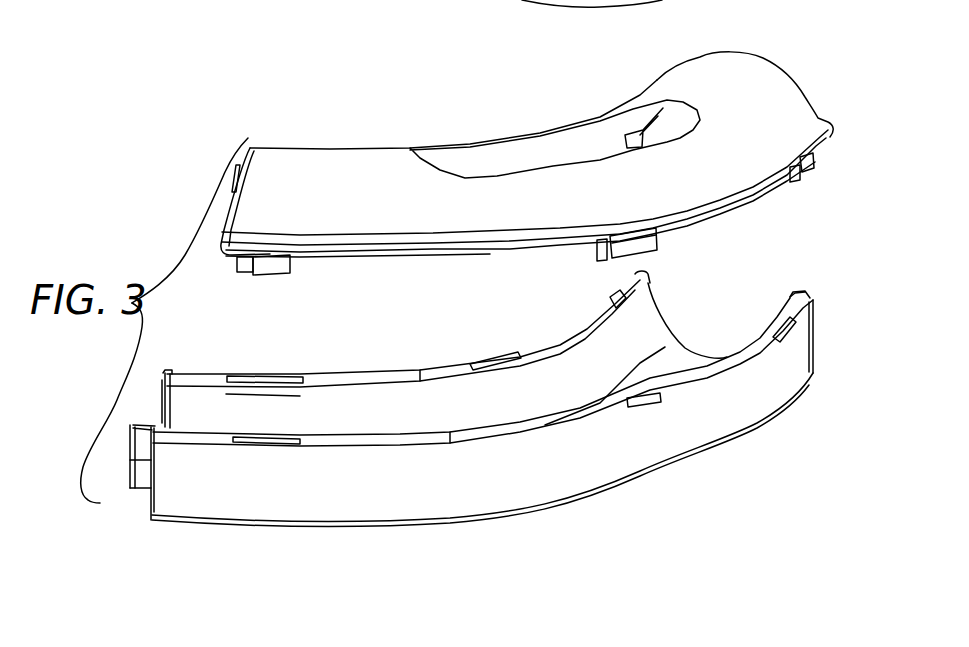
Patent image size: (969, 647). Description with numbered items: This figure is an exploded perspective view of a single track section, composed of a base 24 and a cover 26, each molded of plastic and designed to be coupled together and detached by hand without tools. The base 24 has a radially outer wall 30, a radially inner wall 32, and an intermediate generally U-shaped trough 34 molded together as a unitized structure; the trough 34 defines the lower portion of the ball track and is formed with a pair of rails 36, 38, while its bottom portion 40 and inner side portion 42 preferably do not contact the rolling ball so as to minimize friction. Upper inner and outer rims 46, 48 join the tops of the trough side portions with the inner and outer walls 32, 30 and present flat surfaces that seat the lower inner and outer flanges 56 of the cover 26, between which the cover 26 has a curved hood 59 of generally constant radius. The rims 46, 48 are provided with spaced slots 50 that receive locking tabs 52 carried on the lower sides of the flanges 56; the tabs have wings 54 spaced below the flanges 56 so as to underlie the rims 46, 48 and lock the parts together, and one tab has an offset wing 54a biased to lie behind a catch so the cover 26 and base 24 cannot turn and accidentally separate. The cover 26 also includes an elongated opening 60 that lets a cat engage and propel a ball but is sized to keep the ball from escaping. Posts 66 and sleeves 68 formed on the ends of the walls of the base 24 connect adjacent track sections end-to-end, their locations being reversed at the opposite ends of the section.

The base 24 is at (492, 419).
The cover 26 is at (336, 157).
The radially outer wall 30 is at (388, 508).
The radially inner wall 32 is at (371, 369).
The U-shaped trough 34 is at (480, 396).
The rail 36 is at (668, 362).
The rail 38 is at (750, 347).
The bottom portion of trough 40 is at (693, 370).
The inner side portion of trough 42 is at (318, 410).
The upper inner rim 46 is at (430, 372).
The upper outer rim 48 is at (497, 428).
The slots 50 is at (257, 378).
The locking tabs 52 is at (272, 276).
The wings 54 is at (247, 275).
The offset wing 54a is at (656, 240).
The lower inner and outer flanges 56 is at (490, 252).
The curved hood 59 is at (783, 88).
The elongated opening 60 is at (508, 160).
The posts 66 is at (140, 463).
The sleeves 68 is at (178, 375).